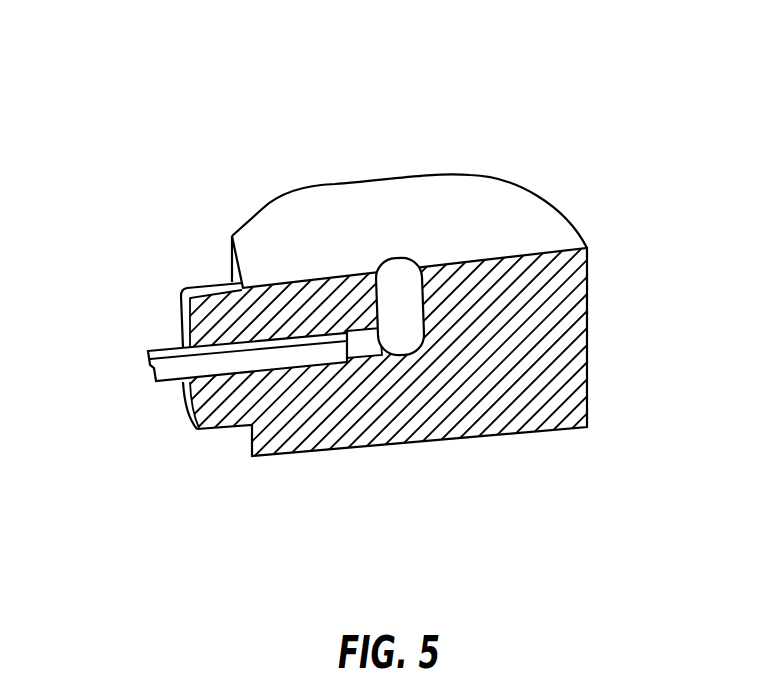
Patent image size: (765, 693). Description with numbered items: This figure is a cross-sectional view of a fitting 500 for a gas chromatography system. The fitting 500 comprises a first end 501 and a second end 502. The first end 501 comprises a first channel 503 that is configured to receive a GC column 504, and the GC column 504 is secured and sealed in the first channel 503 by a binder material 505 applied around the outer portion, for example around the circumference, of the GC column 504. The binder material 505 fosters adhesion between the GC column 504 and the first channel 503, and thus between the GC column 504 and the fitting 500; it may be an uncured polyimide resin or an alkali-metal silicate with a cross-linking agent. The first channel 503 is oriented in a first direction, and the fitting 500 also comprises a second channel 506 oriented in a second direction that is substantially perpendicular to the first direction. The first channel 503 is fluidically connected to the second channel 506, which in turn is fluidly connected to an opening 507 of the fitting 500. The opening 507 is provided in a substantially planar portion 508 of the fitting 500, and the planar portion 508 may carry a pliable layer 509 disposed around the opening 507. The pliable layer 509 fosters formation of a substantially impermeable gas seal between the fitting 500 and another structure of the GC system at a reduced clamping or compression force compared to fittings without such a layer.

The fitting 500 is at (394, 26).
The first end 501 is at (180, 317).
The second end 502 is at (573, 213).
The first channel 503 is at (362, 347).
The GC column 504 is at (180, 365).
The binder material 505 is at (249, 373).
The second channel 506 is at (408, 300).
The opening 507 is at (395, 265).
The planar portion 508 is at (505, 207).
The pliable layer 509 is at (290, 217).